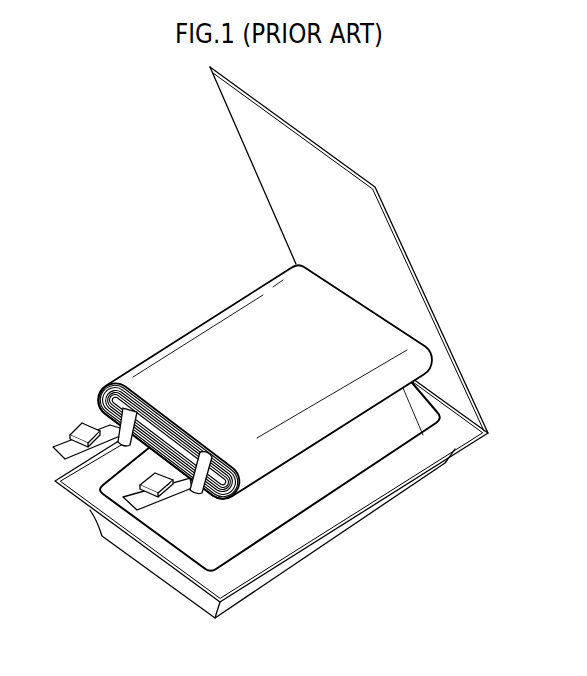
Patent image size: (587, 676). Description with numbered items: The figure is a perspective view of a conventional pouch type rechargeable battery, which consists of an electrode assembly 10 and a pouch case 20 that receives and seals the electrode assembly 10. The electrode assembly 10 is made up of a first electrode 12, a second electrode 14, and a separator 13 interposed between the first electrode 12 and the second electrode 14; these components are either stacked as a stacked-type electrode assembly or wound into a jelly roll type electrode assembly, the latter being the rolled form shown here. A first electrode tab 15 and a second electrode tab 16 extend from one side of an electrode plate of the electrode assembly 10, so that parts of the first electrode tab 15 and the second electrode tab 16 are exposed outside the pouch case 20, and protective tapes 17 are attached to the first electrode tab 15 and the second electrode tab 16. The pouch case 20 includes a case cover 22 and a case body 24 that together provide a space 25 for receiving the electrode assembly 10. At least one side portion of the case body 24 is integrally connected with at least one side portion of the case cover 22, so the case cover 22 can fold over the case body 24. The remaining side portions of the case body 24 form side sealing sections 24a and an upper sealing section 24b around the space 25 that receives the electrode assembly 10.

The electrode assembly 10 is at (229, 453).
The first electrode 12 is at (241, 382).
The separator 13 is at (101, 387).
The second electrode 14 is at (104, 404).
The first electrode tab 15 is at (201, 497).
The second electrode tab 16 is at (112, 441).
The protective tape 17 is at (77, 425).
The pouch case 20 is at (289, 352).
The case cover 22 is at (458, 398).
The case body 24 is at (271, 501).
The side sealing section 24a is at (348, 500).
The upper sealing section 24b is at (186, 567).
The space 25 is at (300, 508).